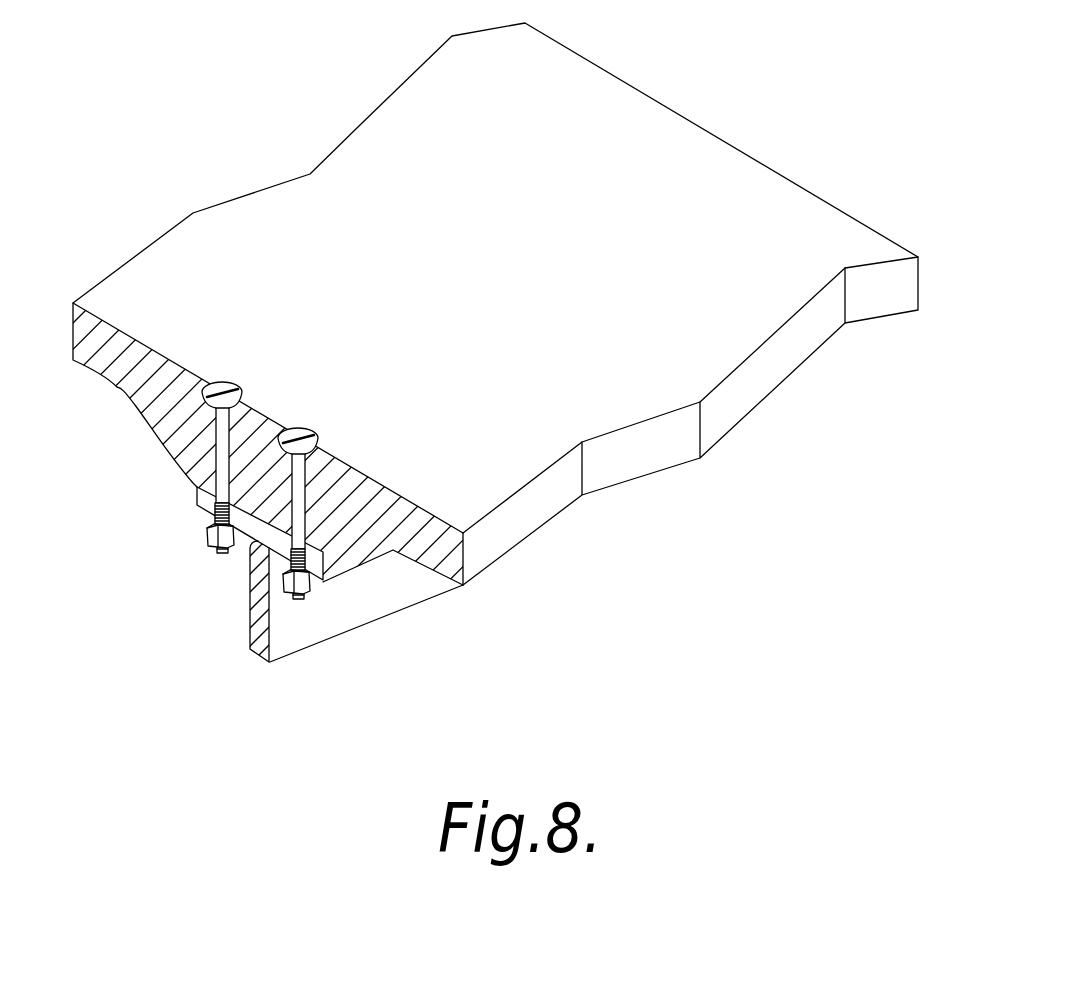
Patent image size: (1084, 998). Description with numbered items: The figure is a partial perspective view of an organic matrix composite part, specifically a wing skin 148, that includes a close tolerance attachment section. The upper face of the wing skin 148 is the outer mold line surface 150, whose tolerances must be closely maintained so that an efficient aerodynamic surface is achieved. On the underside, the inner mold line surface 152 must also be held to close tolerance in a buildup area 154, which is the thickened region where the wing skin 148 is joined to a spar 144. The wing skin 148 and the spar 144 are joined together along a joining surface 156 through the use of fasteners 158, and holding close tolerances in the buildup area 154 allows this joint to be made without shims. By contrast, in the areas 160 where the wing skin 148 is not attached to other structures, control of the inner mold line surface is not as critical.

The spar 144 is at (300, 624).
The wing skin 148 is at (281, 124).
The outer mold line surface 150 is at (682, 150).
The inner mold line surface 152 is at (196, 492).
The buildup area 154 is at (185, 443).
The joining surface 156 is at (250, 557).
The fasteners 158 is at (204, 536).
The areas where the wing skin is not attached to other structures 160 is at (88, 368).